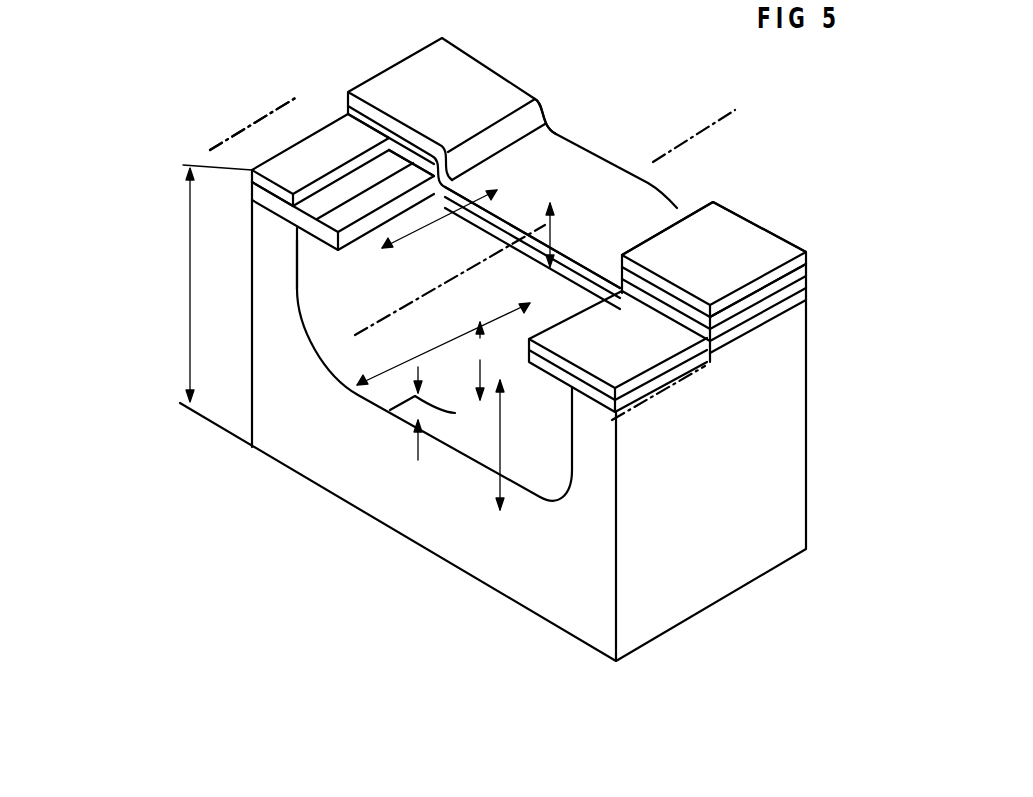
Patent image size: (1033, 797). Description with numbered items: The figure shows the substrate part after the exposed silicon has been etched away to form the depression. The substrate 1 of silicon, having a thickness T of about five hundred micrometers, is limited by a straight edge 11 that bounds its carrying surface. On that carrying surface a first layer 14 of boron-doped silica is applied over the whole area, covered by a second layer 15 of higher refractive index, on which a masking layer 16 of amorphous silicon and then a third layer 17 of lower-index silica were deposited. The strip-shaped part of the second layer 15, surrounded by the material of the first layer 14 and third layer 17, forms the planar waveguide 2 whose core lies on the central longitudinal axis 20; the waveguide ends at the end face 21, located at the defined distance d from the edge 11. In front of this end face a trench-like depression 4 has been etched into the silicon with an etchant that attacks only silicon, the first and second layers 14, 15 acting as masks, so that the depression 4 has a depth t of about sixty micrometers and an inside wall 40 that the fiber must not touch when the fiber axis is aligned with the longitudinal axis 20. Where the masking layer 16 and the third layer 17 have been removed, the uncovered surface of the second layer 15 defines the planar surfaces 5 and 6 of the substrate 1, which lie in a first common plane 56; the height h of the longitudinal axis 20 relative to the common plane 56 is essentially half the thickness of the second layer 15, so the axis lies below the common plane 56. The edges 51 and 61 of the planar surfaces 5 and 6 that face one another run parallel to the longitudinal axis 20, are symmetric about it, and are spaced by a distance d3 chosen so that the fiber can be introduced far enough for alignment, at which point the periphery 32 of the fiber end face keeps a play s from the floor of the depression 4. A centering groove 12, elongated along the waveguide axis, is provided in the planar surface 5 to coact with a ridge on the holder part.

The substrate 1 is at (707, 580).
The planar waveguide 2 is at (565, 150).
The trench-like depression 4 is at (481, 361).
The planar surface 5 is at (312, 155).
The planar surface 6 is at (703, 337).
The edge of the substrate 11 is at (253, 250).
The groove 12 is at (352, 165).
The first layer 14 is at (806, 299).
The second layer 15 is at (806, 288).
The masking layer 16 is at (806, 265).
The third layer 17 is at (806, 253).
The longitudinal axis 20 is at (407, 303).
The end face 21 is at (523, 228).
The periphery of the end face of the fiber 32 is at (383, 407).
The inside wall of the depression 40 is at (315, 293).
The edge of planar surface 5 51 is at (412, 182).
The common plane 56 is at (255, 118).
The edge of planar surface 6 61 is at (576, 306).
The thickness of the substrate T is at (185, 276).
The defined distance d is at (437, 332).
The distance between edges d3 is at (439, 222).
The height of the longitudinal axis h is at (563, 237).
The play s is at (415, 425).
The depth of the depression t is at (497, 440).